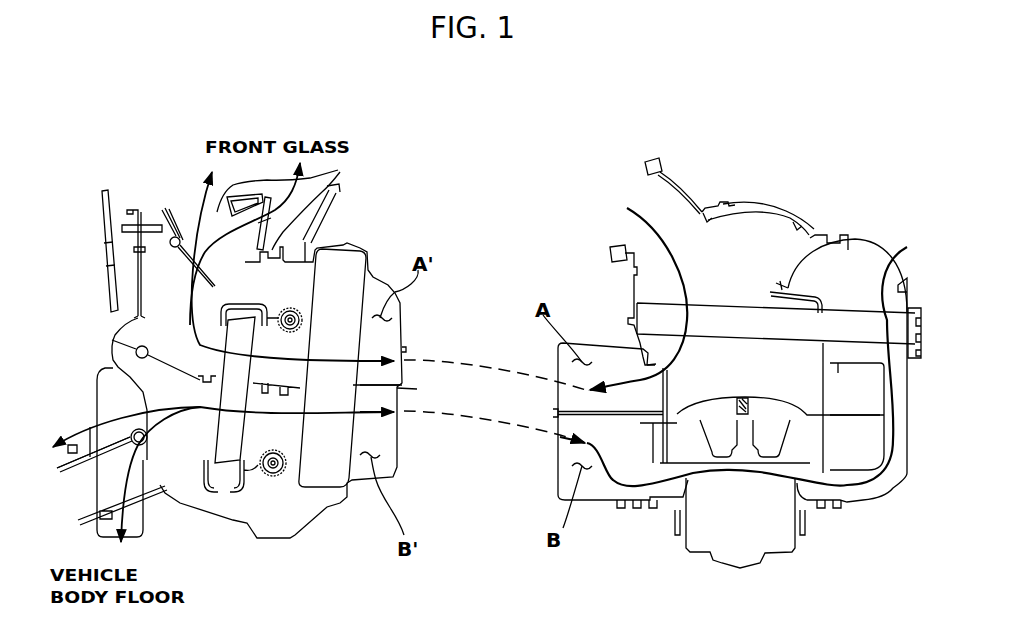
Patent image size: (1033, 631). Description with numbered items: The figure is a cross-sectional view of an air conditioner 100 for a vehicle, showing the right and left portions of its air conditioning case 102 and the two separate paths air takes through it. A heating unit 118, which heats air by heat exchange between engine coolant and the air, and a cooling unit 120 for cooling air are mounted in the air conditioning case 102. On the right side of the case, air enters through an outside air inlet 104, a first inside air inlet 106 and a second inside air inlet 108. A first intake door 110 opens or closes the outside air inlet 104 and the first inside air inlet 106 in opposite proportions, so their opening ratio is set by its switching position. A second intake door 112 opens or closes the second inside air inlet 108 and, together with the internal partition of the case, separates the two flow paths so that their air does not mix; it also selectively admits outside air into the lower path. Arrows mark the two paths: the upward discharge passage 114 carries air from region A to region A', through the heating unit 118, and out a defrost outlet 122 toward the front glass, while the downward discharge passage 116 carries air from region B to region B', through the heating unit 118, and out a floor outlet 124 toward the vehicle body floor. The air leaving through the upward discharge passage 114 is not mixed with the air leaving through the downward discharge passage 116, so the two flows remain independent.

The air conditioner 100 is at (150, 164).
The air conditioning case 102 is at (404, 444).
The outside air inlet 104 is at (665, 210).
The first inside air inlet 106 is at (747, 210).
The second inside air inlet 108 is at (867, 250).
The first intake door 110 is at (770, 208).
The second intake door 112 is at (818, 232).
The upward discharge passage 114 is at (613, 350).
The downward discharge passage 116 is at (870, 480).
The heating unit 118 is at (226, 458).
The cooling unit 120 is at (320, 488).
The defrost outlet 122 is at (338, 170).
The floor outlet 124 is at (123, 549).